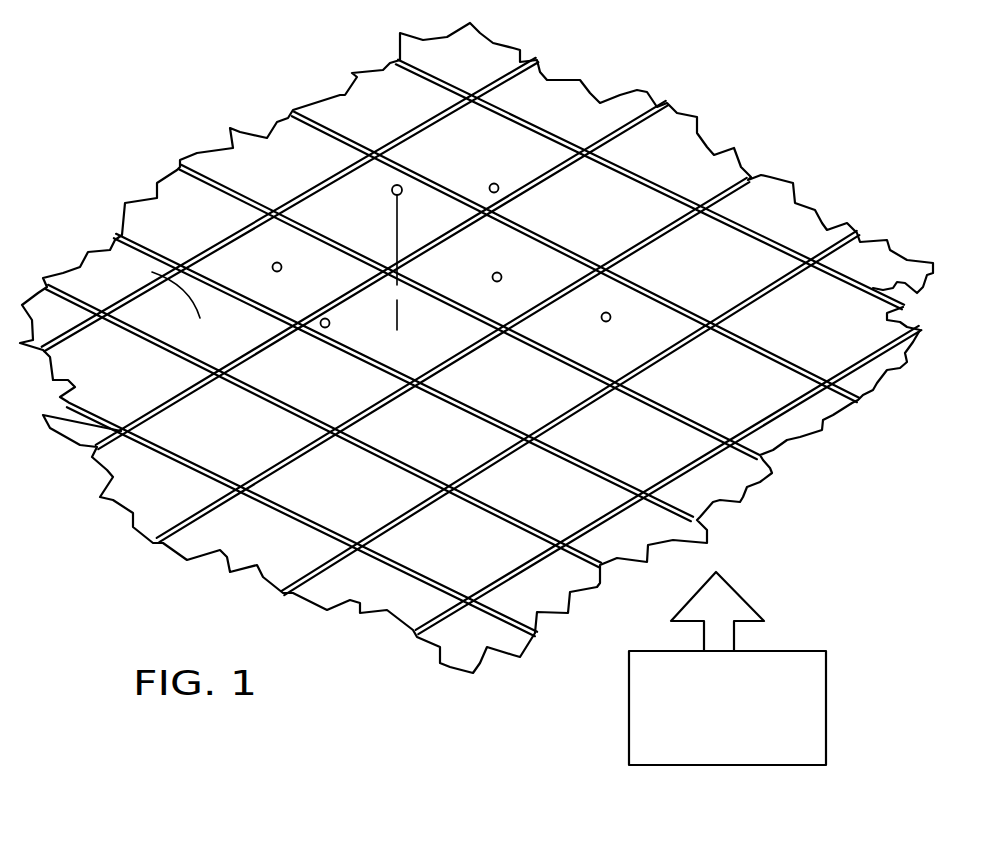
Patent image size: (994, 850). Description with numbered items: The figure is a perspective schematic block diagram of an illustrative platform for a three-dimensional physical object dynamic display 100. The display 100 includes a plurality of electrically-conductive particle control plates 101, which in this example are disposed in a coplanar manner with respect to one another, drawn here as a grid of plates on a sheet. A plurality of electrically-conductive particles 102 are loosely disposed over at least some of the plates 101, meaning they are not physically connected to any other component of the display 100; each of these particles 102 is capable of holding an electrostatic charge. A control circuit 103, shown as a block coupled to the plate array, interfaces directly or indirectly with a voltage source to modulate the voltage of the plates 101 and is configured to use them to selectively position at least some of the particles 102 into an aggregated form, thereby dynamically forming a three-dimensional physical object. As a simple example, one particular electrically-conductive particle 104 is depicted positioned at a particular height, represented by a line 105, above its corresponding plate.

The 3-dimensional physical object dynamic display 100 is at (476, 394).
The electrically-conductive particle control plates 101 is at (173, 223).
The electrically-conductive particles 102 is at (278, 262).
The control circuit 103 is at (627, 686).
The particular electrically-conductive particle 104 is at (345, 200).
The line representing particle height 105 is at (393, 227).